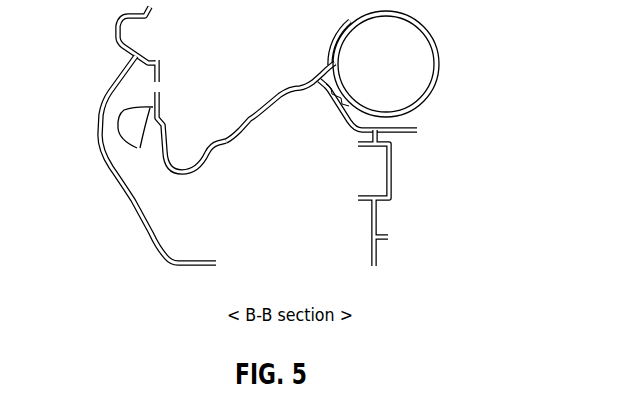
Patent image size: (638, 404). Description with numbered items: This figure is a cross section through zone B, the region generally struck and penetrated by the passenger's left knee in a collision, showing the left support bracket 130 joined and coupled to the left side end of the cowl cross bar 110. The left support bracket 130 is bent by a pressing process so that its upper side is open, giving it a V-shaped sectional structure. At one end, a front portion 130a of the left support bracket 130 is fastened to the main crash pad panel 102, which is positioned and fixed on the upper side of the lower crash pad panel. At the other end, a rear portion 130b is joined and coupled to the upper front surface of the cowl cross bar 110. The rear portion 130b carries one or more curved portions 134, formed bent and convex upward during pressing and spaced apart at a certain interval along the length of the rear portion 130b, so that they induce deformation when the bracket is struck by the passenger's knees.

The main crash pad panel 102 is at (117, 32).
The cowl cross bar 110 is at (439, 62).
The left support bracket 130 is at (220, 160).
The front portion 130a is at (182, 176).
The rear portion 130b is at (441, 137).
The curved portions 134 is at (248, 118).